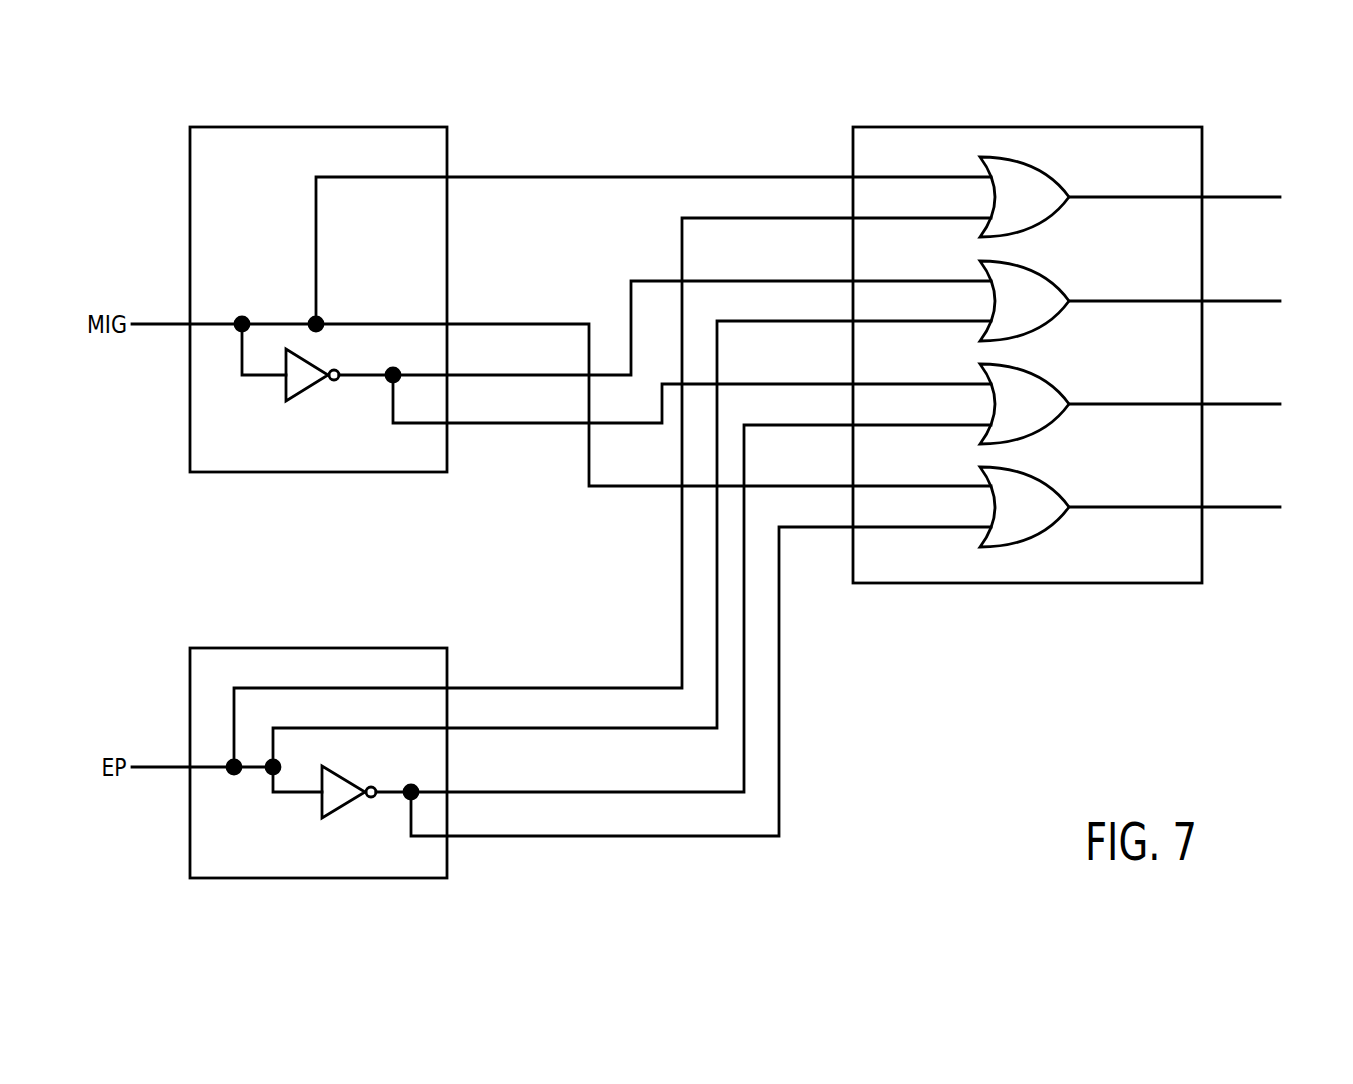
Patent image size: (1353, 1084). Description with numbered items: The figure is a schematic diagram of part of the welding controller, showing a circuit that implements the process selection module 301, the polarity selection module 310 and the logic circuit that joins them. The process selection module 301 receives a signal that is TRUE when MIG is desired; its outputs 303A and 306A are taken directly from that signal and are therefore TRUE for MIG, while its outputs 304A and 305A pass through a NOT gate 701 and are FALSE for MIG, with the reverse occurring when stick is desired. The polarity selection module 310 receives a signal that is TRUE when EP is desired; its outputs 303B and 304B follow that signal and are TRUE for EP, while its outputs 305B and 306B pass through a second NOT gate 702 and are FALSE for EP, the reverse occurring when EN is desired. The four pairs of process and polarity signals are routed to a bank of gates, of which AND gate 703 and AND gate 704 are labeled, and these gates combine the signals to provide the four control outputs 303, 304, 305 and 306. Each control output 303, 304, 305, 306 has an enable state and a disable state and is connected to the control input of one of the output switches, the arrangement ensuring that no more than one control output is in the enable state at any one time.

The process selection module 301 is at (190, 193).
The polarity selection module 310 is at (190, 713).
The NOT gate 701 is at (310, 387).
The NOT gate 702 is at (343, 805).
The AND gate 703 is at (1032, 165).
The AND gate 704 is at (1032, 268).
The control output 303 is at (1232, 197).
The control output 304 is at (1232, 301).
The control output 305 is at (1232, 404).
The control output 306 is at (1232, 507).
The output 303A is at (635, 176).
The output 304A is at (560, 374).
The output 305A is at (563, 424).
The output 306A is at (573, 323).
The output 303B is at (638, 687).
The output 304B is at (643, 729).
The output 305B is at (560, 791).
The output 306B is at (562, 837).